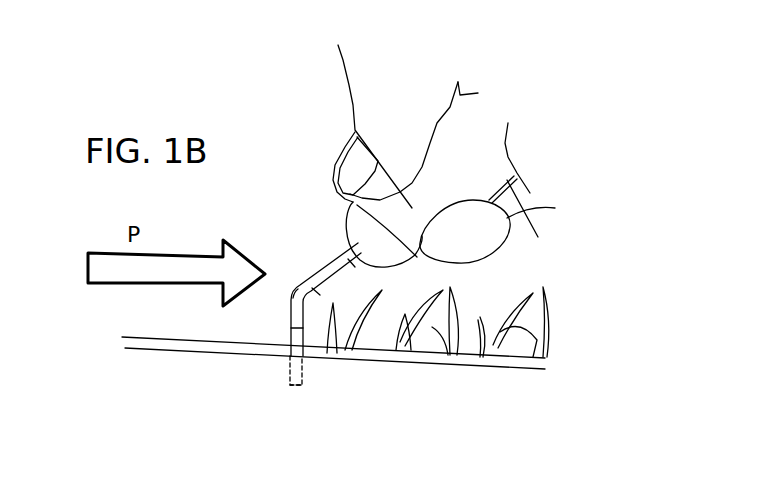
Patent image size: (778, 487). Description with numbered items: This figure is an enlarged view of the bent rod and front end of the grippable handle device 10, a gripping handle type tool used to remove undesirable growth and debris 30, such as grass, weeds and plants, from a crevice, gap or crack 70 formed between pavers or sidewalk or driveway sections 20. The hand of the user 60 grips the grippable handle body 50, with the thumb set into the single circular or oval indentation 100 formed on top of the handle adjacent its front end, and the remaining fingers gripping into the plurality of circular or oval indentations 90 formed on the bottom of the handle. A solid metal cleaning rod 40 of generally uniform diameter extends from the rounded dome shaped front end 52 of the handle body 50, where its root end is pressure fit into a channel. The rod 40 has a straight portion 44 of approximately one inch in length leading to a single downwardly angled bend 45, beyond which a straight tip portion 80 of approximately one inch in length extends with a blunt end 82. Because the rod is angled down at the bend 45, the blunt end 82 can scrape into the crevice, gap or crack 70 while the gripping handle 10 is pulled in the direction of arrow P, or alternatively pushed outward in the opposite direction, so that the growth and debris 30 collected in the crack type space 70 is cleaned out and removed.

The gripping handle type tool 10 is at (562, 146).
The paver or sidewalk section or driveway section 20 is at (267, 322).
The undesirable growth and debris 30 is at (547, 318).
The solid metal cleaning rod 40 is at (332, 270).
The straight portion 44 is at (350, 250).
The single downwardly angled bend 45 is at (300, 297).
The grippable handle body 50 is at (355, 130).
The rounded dome shaped front end 52 is at (350, 227).
The user 60 is at (390, 102).
The crevice/gap/crack 70 is at (198, 343).
The straight tip portion 80 is at (297, 375).
The blunt end 82 is at (289, 386).
The plurality of circular or oval indentations 90 is at (478, 245).
The single circular or oval indentation 100 is at (423, 175).